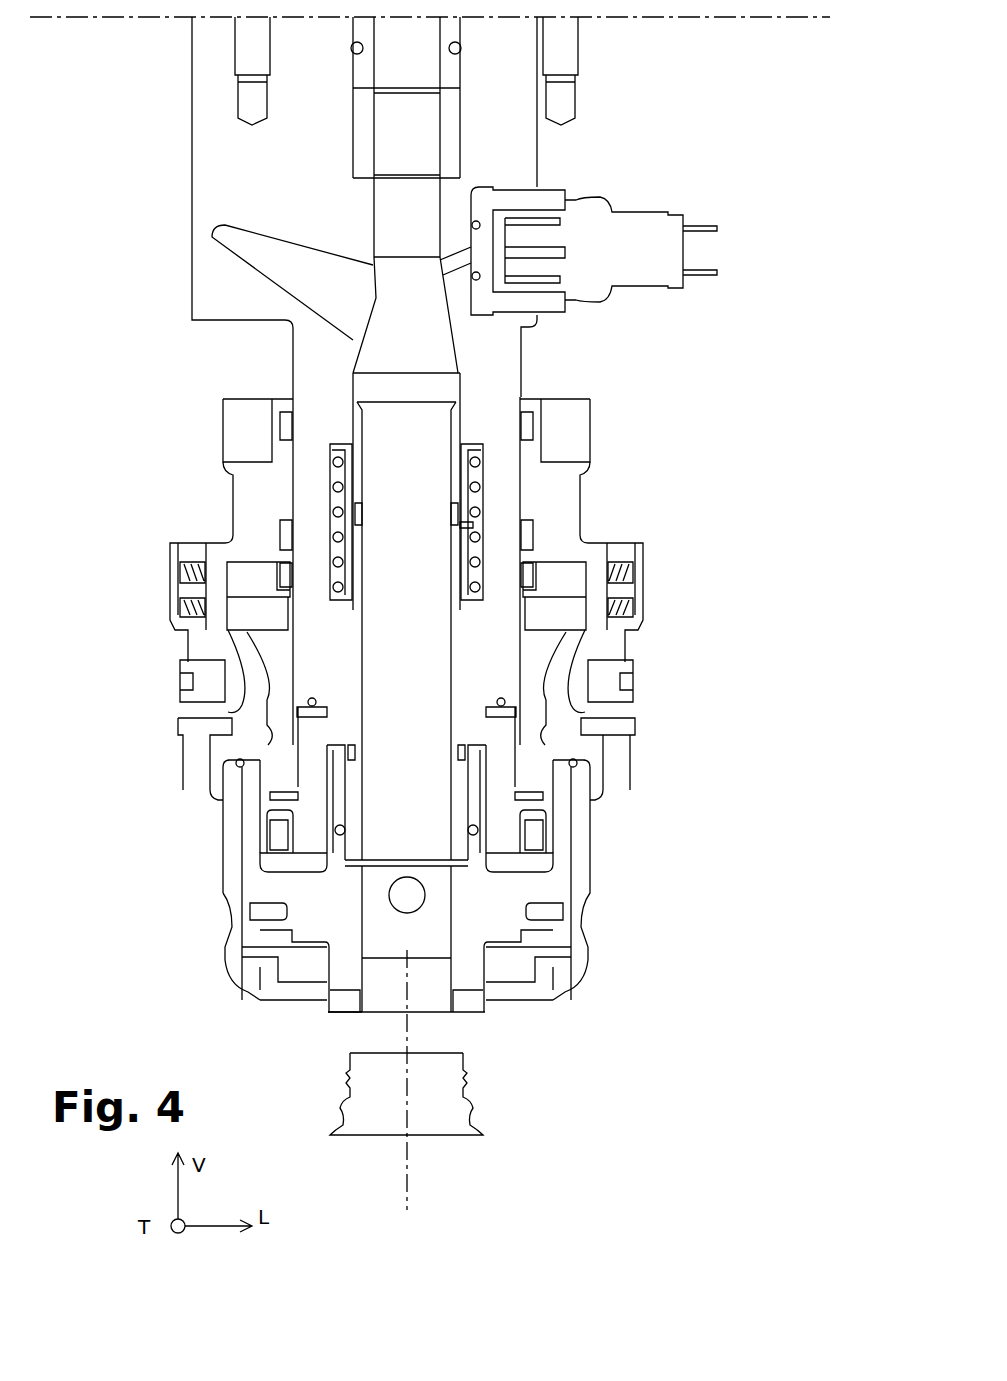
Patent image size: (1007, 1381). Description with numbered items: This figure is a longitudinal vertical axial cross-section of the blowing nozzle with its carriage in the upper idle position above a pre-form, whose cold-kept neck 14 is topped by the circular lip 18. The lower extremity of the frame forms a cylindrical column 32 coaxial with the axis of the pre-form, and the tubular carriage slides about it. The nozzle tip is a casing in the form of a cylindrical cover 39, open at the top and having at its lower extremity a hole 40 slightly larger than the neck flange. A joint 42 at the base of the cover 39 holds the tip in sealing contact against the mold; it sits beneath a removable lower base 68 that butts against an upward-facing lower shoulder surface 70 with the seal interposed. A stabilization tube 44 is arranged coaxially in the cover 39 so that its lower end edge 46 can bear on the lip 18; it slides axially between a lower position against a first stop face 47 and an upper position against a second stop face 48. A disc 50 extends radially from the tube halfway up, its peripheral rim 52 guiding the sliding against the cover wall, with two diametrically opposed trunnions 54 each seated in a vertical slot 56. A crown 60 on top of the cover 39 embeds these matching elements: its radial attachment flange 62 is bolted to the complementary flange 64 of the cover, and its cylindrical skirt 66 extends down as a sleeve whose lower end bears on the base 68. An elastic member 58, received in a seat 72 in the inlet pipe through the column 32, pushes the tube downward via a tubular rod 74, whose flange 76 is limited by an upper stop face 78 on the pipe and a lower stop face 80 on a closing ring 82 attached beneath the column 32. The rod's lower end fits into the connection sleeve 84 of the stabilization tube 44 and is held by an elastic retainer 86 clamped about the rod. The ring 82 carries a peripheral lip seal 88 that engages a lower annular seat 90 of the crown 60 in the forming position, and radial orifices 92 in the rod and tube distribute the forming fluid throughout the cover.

The neck 14 is at (447, 1105).
The lip 18 is at (443, 1053).
The cylindrical column 32 is at (495, 582).
The cylindrical cover 39 is at (223, 890).
The hole 40 is at (480, 1005).
The joint 42 is at (280, 1005).
The stabilization tube 44 is at (340, 1012).
The lower end edge 46 is at (350, 1017).
The first stop face 47 is at (545, 912).
The second stop face 48 is at (267, 826).
The disc 50 is at (525, 878).
The peripheral rim 52 is at (555, 905).
The trunnion 54 is at (245, 940).
The vertical slot 56 is at (255, 908).
The elastic member 58 is at (475, 523).
The crown 60 is at (568, 685).
The radial attachment flange 62 is at (625, 753).
The complementary flange 64 is at (625, 785).
The cylindrical skirt 66 is at (560, 835).
The removable lower base 68 is at (540, 998).
The lower shoulder surface 70 is at (555, 965).
The seat 72 is at (478, 485).
The tubular rod 74 is at (578, 657).
The flange 76 is at (333, 610).
The upper stop face 78 is at (333, 468).
The lower stop face 80 is at (333, 645).
The closing ring 82 is at (312, 837).
The connection sleeve 84 is at (347, 793).
The elastic retainer 86 is at (472, 836).
The lip seal 88 is at (505, 833).
The lower annular seat 90 is at (270, 715).
The radial orifices 92 is at (451, 515).